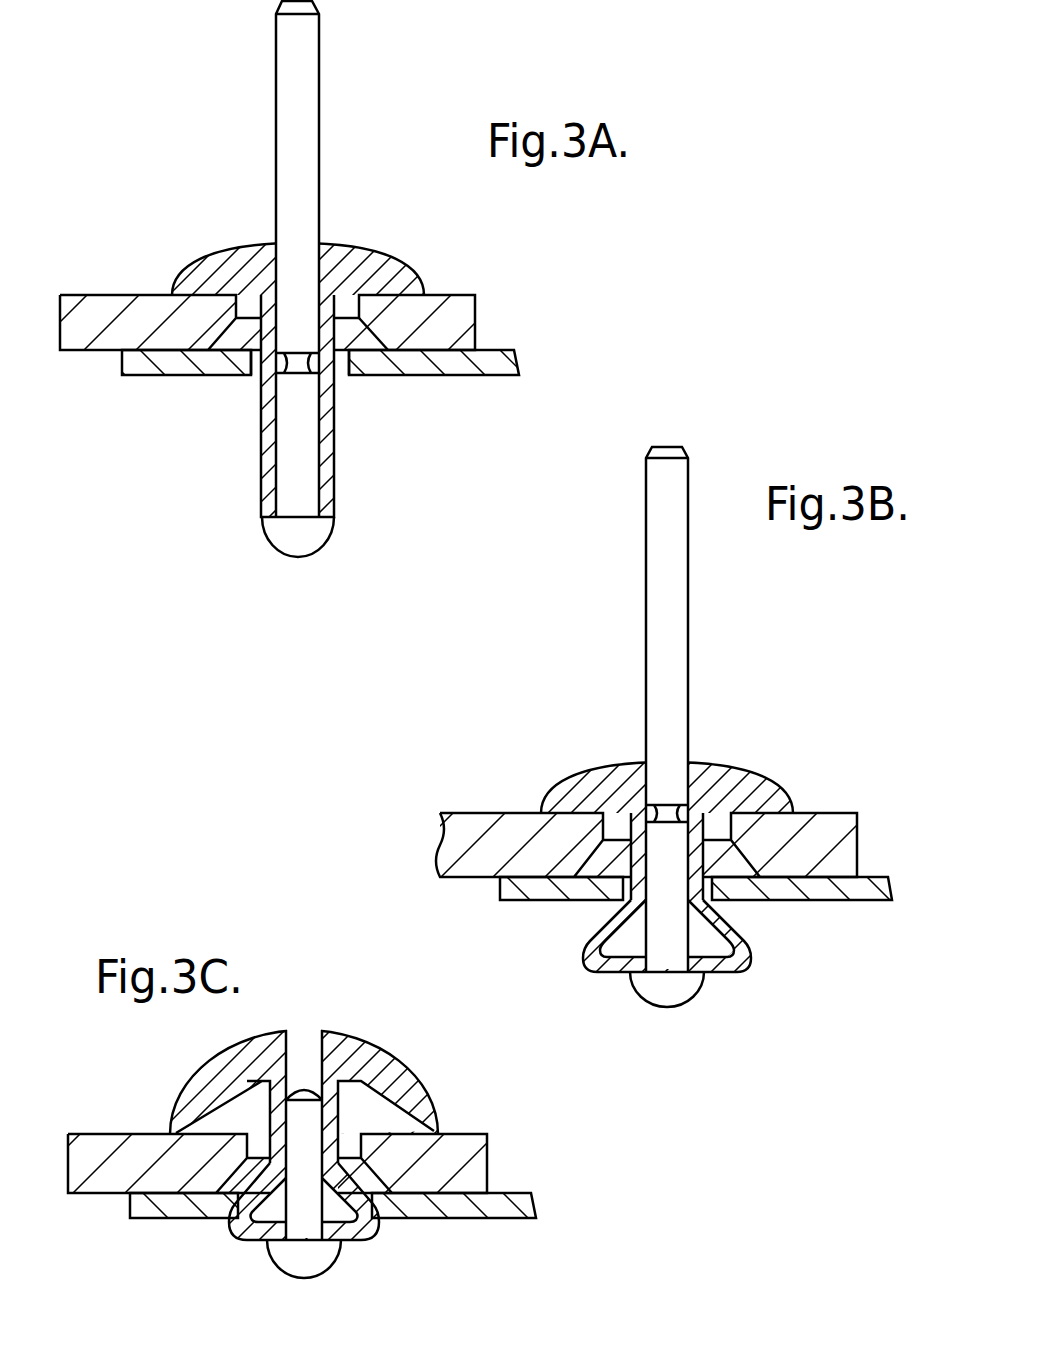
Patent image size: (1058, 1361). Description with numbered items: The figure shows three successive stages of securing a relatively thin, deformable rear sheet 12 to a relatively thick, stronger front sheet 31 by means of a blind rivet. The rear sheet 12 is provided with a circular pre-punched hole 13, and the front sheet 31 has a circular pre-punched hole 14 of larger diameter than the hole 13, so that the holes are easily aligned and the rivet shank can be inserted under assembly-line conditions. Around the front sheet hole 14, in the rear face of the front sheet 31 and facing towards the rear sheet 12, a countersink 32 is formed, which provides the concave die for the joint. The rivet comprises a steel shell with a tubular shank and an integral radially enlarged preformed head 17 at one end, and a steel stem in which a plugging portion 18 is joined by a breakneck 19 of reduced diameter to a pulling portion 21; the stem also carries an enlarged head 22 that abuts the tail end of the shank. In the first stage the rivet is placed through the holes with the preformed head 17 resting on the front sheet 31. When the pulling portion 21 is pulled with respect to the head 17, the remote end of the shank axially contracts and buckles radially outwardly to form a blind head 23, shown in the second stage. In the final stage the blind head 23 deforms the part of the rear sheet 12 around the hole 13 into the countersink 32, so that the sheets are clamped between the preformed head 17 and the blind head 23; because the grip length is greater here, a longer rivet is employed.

In FIG. 3A, the rear sheet 12 is at (496, 358).
In FIG. 3B, the rear sheet 12 is at (552, 901).
In FIG. 3C, the rear sheet 12 is at (527, 1203).
In FIG. 3A, the pre-punched hole 13 is at (343, 372).
In FIG. 3A, the front sheet hole 14 is at (347, 302).
In FIG. 3B, the front sheet hole 14 is at (720, 820).
In FIG. 3C, the front sheet hole 14 is at (360, 1130).
In FIG. 3A, the preformed head 17 is at (207, 264).
In FIG. 3B, the preformed head 17 is at (568, 788).
In FIG. 3C, the preformed head 17 is at (203, 1088).
In FIG. 3A, the plugging portion 18 is at (298, 447).
In FIG. 3A, the breakneck 19 is at (262, 378).
In FIG. 3A, the pulling portion 21 is at (309, 149).
In FIG. 3B, the pulling portion 21 is at (680, 638).
In FIG. 3A, the enlarged head 22 is at (334, 519).
In FIG. 3B, the enlarged head 22 is at (685, 987).
In FIG. 3C, the enlarged head 22 is at (288, 1257).
In FIG. 3B, the blind head 23 is at (742, 931).
In FIG. 3C, the blind head 23 is at (367, 1229).
In FIG. 3A, the front sheet 31 is at (455, 316).
In FIG. 3B, the front sheet 31 is at (802, 820).
In FIG. 3C, the front sheet 31 is at (477, 1167).
In FIG. 3A, the countersink 32 is at (383, 348).